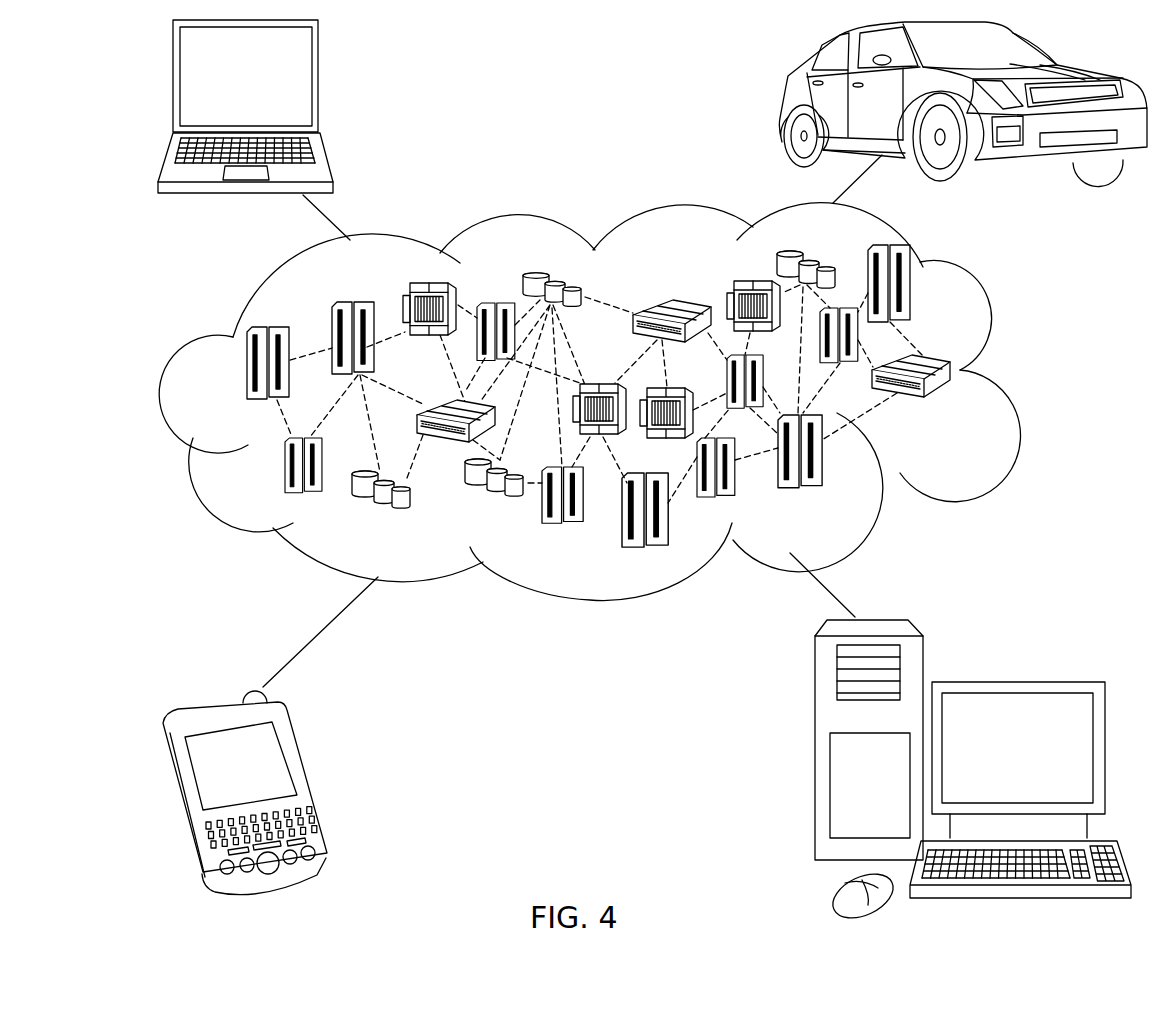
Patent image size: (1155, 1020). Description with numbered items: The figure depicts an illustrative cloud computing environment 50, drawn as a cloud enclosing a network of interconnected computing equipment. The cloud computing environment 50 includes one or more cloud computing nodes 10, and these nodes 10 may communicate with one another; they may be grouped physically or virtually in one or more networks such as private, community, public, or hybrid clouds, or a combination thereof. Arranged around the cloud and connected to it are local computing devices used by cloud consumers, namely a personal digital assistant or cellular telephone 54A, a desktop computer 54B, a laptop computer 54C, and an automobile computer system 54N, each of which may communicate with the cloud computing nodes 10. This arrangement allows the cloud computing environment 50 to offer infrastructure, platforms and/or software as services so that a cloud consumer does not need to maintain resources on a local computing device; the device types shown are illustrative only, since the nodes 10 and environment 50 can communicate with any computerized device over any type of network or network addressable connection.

The cloud computing node 10 is at (953, 408).
The cloud computing environment 50 is at (1013, 373).
The personal digital assistant (PDA) or cellular telephone 54A is at (310, 780).
The desktop computer 54B is at (1014, 684).
The laptop computer 54C is at (320, 84).
The automobile computer system 54N is at (786, 100).